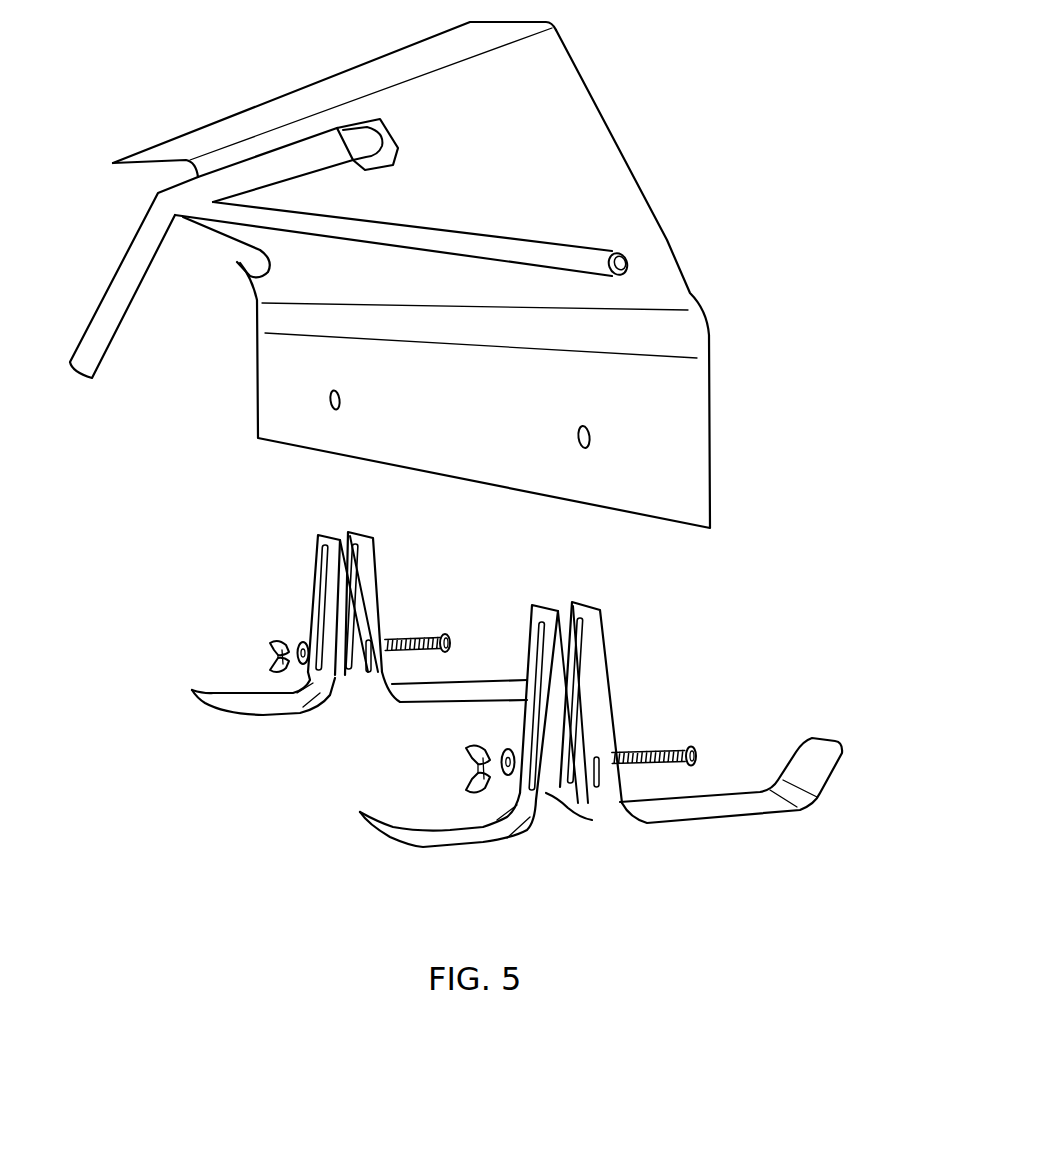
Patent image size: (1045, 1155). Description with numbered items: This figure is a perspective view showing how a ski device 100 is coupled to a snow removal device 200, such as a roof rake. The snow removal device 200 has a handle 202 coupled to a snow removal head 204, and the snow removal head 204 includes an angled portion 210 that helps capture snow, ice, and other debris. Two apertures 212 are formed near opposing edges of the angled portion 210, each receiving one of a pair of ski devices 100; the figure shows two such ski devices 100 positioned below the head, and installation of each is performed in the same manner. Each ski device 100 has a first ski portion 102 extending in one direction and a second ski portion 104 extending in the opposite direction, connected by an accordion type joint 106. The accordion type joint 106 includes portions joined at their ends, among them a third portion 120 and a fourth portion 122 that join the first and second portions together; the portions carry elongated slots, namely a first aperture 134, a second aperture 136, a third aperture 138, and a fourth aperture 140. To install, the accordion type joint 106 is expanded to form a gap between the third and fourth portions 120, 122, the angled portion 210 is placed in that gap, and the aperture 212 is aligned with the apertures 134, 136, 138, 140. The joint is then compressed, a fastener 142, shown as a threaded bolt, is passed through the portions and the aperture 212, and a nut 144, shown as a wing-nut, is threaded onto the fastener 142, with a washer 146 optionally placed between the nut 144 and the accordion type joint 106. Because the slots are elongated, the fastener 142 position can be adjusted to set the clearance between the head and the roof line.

The ski device 100 is at (838, 592).
The first ski portion 102 is at (767, 813).
The second ski portion 104 is at (435, 847).
The accordion type joint 106 is at (607, 602).
The third portion 120 is at (600, 608).
The fourth portion 122 is at (555, 790).
The first aperture 134 is at (600, 775).
The second aperture 136 is at (523, 800).
The third aperture 138 is at (585, 655).
The fourth aperture 140 is at (555, 788).
The fastener 142 is at (688, 745).
The nut 144 is at (463, 752).
The washer 146 is at (505, 753).
The snow removal device 200 is at (273, 76).
The handle 202 is at (107, 325).
The snow removal head 204 is at (638, 182).
The angled portion 210 is at (438, 460).
The apertures 212 is at (331, 404).